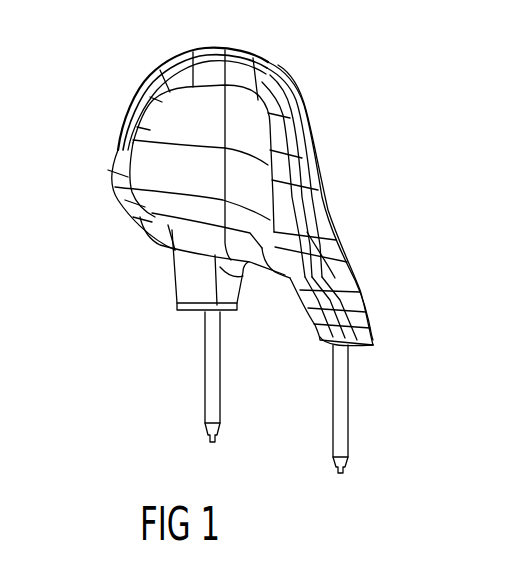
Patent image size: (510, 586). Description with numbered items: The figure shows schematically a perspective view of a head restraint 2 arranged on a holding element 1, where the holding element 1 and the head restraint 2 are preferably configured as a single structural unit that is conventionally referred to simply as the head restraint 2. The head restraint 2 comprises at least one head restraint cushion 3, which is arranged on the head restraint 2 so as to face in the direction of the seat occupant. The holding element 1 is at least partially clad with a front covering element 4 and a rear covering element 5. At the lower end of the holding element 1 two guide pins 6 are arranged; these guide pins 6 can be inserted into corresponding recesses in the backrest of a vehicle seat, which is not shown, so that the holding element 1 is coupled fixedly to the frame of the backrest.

The holding element 1 is at (368, 310).
The head restraint 2 is at (280, 65).
The head restraint cushion 3 is at (142, 164).
The front covering element 4 is at (182, 278).
The rear covering element 5 is at (340, 234).
The guide pins 6 is at (212, 385).